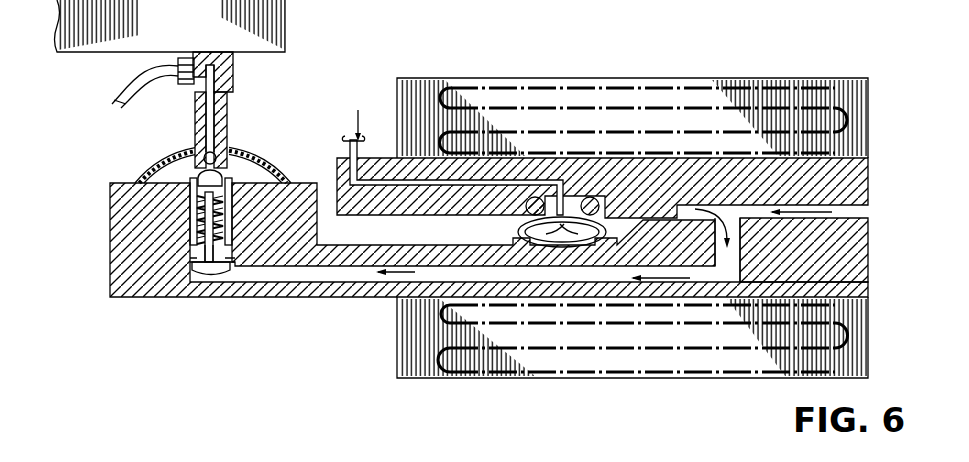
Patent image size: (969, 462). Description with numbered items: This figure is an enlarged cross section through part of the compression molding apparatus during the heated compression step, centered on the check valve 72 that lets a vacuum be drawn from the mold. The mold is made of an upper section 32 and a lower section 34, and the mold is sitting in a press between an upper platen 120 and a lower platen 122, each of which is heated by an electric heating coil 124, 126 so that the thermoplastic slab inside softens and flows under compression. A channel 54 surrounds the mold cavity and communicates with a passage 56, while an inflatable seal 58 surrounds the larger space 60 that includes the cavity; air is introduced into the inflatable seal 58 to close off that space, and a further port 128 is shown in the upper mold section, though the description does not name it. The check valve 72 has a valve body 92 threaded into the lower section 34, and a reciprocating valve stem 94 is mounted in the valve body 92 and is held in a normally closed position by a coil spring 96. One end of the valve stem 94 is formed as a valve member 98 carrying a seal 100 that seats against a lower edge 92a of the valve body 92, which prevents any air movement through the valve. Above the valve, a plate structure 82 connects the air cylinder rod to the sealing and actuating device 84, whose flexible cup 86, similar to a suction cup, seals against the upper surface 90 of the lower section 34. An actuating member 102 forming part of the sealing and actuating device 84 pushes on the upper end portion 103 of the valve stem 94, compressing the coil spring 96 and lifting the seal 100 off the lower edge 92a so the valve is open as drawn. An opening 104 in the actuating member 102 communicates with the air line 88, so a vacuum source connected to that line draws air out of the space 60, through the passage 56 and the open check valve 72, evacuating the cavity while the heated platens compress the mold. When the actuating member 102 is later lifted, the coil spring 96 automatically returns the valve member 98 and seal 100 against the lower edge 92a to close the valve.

The plate structure 82 is at (174, 25).
The sealing and actuating device 84 is at (306, 55).
The air line 88 is at (122, 99).
The actuating member 102 is at (235, 84).
The flexible cup 86 is at (167, 159).
The upper surface 90 is at (120, 183).
The opening 104 is at (236, 141).
The upper end portion 103 is at (246, 160).
The coil spring 96 is at (197, 216).
The valve body 92 is at (204, 254).
The check valve 72 is at (229, 218).
The valve stem 94 is at (235, 256).
The lower edge 92a is at (199, 252).
The seal 100 is at (192, 273).
The valve member 98 is at (216, 276).
The passage 56 is at (322, 292).
The inflatable seal 58 is at (516, 231).
The inlet passage 128 is at (392, 157).
The electric heating coil 124 is at (603, 108).
The upper platen 120 is at (660, 78).
The space 60 is at (737, 204).
The upper section 32 is at (868, 190).
The lower section 34 is at (868, 231).
The channel 54 is at (740, 229).
The lower platen 122 is at (450, 380).
The electric heating coil 126 is at (553, 372).